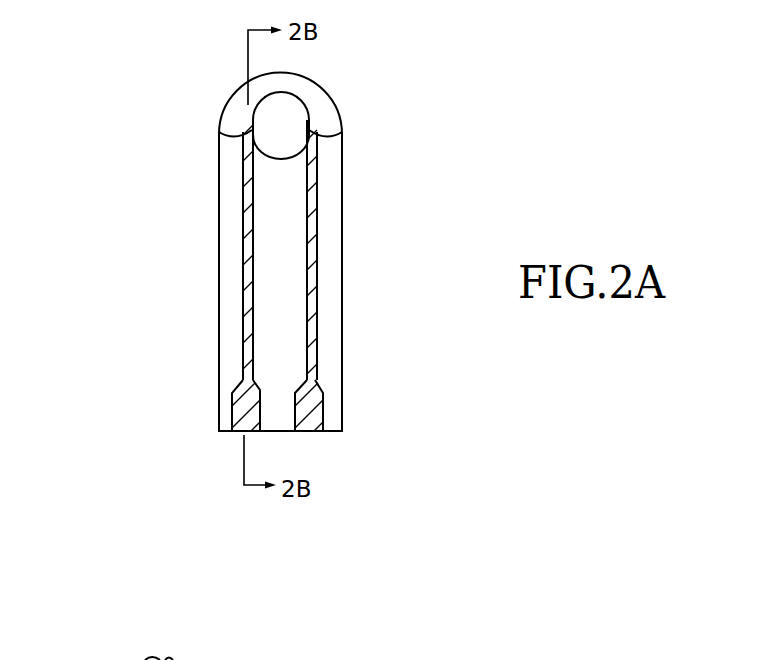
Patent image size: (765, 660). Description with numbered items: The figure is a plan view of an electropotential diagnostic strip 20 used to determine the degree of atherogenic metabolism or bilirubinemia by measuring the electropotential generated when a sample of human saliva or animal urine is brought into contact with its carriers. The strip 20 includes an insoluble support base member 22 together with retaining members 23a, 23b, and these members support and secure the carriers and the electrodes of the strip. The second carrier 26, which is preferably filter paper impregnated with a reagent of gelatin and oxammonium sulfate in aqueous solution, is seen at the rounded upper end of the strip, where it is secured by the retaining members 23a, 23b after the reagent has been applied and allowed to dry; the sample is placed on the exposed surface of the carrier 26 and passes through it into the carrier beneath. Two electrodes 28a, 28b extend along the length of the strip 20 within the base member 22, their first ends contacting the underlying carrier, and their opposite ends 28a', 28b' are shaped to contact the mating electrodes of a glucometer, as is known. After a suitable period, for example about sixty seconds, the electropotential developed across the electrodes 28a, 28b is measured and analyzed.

The electropotential diagnostic strip 20 is at (193, 253).
The insoluble support base member 22 is at (331, 224).
The retaining member 23a is at (333, 112).
The retaining member 23b is at (280, 363).
The second carrier 26 is at (288, 142).
The electrode 28a is at (194, 250).
The opposite end of electrode 28a' is at (190, 405).
The electrode 28b is at (372, 250).
The opposite end of electrode 28b' is at (373, 417).